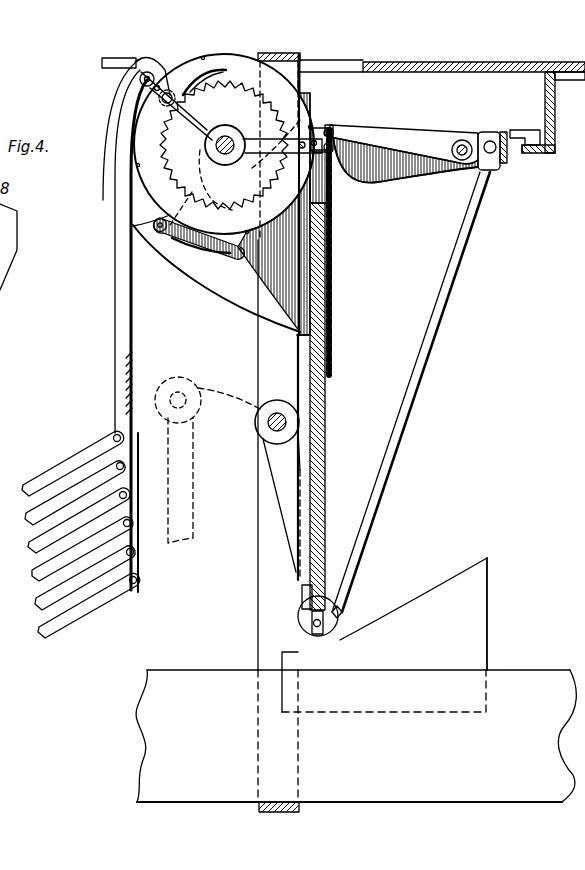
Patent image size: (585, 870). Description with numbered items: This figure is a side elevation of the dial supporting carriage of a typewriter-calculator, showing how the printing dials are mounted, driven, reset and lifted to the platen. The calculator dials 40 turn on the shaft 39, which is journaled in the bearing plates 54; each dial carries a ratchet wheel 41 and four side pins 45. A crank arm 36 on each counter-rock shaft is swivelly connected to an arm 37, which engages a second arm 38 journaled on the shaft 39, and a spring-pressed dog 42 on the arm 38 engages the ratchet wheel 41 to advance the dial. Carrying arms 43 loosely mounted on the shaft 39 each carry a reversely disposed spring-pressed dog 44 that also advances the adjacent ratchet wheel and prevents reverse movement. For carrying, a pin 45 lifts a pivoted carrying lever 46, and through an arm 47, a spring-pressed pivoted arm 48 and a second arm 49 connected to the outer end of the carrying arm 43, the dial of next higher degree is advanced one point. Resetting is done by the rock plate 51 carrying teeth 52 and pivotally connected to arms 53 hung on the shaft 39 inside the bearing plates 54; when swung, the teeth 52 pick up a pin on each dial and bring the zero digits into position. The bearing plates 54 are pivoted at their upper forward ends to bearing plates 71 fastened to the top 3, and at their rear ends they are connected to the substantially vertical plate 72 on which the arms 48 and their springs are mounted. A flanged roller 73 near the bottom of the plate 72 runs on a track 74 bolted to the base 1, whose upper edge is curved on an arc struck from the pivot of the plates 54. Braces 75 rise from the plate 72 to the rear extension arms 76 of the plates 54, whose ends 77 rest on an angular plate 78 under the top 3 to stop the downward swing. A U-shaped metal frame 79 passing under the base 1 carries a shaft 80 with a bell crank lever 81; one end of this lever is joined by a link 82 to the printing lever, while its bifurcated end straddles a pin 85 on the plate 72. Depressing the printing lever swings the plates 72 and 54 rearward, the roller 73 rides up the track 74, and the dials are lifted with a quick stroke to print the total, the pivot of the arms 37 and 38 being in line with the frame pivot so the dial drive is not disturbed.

The base 1 is at (150, 767).
The top 3 is at (492, 62).
The crank arm 36 is at (50, 472).
The arm 37 is at (141, 374).
The second arm 38 is at (197, 118).
The shaft 39 is at (216, 149).
The calculator dial 40 is at (312, 98).
The ratchet wheel 41 is at (225, 200).
The spring-pressed dog 42 is at (204, 98).
The carrying arm 43 is at (256, 140).
The spring-pressed dog 44 is at (240, 187).
The pin 45 is at (203, 56).
The carrying lever 46 is at (397, 131).
The arm 47 is at (340, 143).
The spring-pressed pivoted arm 48 is at (332, 274).
The second arm 49 is at (342, 192).
The rock plate 51 is at (197, 256).
The teeth 52 is at (241, 281).
The arm 53 is at (163, 232).
The bearing plate 54 is at (122, 158).
The bearing plate 71 is at (140, 58).
The plate 72 is at (326, 454).
The flanged roller 73 is at (338, 636).
The track 74 is at (396, 614).
The brace 75 is at (400, 452).
The rear extension arm 76 is at (455, 135).
The end 77 is at (521, 130).
The angular plate 78 is at (530, 154).
The U-shaped metal frame 79 is at (258, 349).
The shaft 80 is at (258, 435).
The bell crank lever 81 is at (236, 394).
The link 82 is at (195, 531).
The pin 85 is at (338, 605).